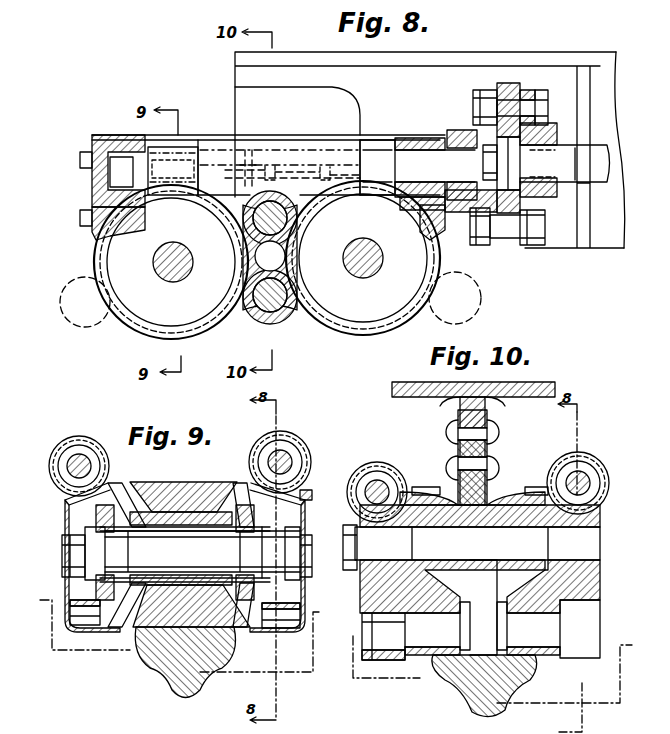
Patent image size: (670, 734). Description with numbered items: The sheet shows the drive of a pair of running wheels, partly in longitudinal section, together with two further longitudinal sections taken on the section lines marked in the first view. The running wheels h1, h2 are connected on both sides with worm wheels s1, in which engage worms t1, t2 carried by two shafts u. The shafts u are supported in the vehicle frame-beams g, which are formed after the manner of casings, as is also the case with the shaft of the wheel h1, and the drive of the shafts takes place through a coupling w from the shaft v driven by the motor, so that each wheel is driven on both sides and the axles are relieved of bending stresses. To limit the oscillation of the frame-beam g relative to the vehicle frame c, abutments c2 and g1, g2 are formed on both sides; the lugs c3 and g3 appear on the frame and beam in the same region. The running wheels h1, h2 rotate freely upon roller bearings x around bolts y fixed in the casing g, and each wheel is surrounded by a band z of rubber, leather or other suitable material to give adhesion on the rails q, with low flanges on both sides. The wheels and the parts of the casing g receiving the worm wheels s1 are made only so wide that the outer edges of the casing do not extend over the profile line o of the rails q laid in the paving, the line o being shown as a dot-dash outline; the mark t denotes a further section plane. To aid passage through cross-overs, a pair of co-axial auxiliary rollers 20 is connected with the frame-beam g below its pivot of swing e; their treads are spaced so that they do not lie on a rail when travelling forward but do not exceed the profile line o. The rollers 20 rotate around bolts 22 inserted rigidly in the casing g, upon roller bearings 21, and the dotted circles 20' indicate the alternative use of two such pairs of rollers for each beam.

In FIG. 8, the vehicle frame c is at (550, 56).
In FIG. 10, the vehicle frame c is at (490, 445).
In FIG. 8, the abutment c2 is at (268, 160).
In FIG. 10, the frame bracket lug c3 is at (518, 492).
In FIG. 8, the pivot of swing e is at (240, 200).
In FIG. 10, the pivot of swing e is at (586, 541).
In FIG. 8, the vehicle frame-beam g is at (100, 230).
In FIG. 9, the vehicle frame-beam g is at (308, 494).
In FIG. 10, the vehicle frame-beam g is at (580, 582).
In FIG. 8, the abutment g1 is at (288, 170).
In FIG. 8, the abutment g2 is at (246, 165).
In FIG. 10, the abutment g2 is at (426, 488).
In FIG. 10, the housing part g3 is at (545, 488).
In FIG. 8, the running wheel h1 is at (208, 325).
In FIG. 9, the running wheel h1 is at (124, 625).
In FIG. 8, the running wheel h2 is at (335, 330).
In FIG. 8, the worm t1 is at (180, 150).
In FIG. 9, the worm t1 is at (110, 478).
In FIG. 8, the worm t2 is at (364, 145).
In FIG. 8, the shaft u is at (410, 160).
In FIG. 9, the shaft u is at (80, 455).
In FIG. 10, the shaft u is at (378, 480).
In FIG. 8, the shaft v is at (588, 162).
In FIG. 8, the coupling w is at (512, 242).
In FIG. 9, the roller bearing x is at (92, 527).
In FIG. 8, the bolt y is at (170, 275).
In FIG. 9, the bolt y is at (112, 552).
In FIG. 9, the band z is at (178, 488).
In FIG. 9, the rail q is at (176, 678).
In FIG. 10, the rail q is at (470, 704).
In FIG. 9, the worm wheel s1 is at (274, 636).
In FIG. 9, the profile line o is at (176, 631).
In FIG. 10, the profile line o is at (496, 669).
In FIG. 10, the section plane t is at (562, 707).
In FIG. 8, the auxiliary roller 20 is at (262, 273).
In FIG. 10, the auxiliary roller 20 is at (496, 655).
In FIG. 8, the auxiliary roller 20' is at (286, 316).
In FIG. 10, the roller bearing 21 is at (430, 568).
In FIG. 8, the bolt 22 is at (282, 322).
In FIG. 10, the bolt 22 is at (433, 640).